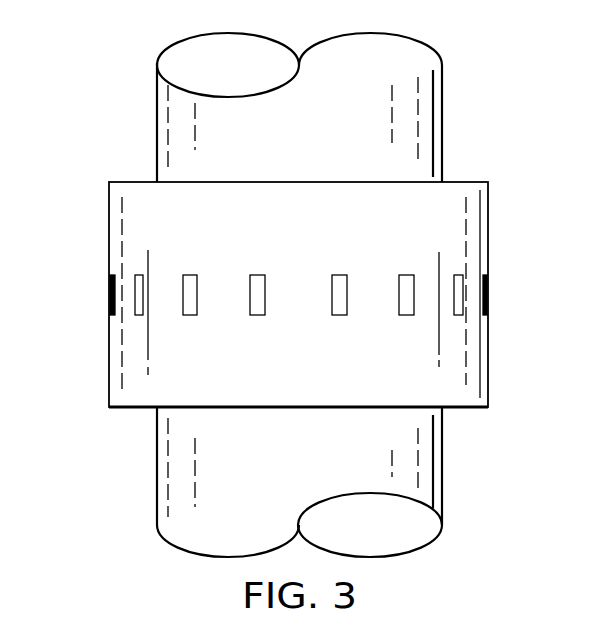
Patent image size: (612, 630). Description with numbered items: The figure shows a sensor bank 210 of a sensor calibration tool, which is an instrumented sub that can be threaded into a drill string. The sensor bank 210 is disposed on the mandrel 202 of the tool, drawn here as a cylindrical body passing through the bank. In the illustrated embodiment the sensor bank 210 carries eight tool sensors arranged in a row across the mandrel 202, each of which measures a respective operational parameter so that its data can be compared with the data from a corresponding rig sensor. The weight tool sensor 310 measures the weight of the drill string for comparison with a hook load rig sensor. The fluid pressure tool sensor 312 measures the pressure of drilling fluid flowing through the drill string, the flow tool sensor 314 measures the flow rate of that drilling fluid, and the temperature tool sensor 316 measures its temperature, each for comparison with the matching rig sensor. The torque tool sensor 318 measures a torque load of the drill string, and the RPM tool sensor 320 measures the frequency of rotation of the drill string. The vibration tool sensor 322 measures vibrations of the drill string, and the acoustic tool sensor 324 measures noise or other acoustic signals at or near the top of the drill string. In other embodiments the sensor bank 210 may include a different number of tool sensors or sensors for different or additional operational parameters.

The mandrel 202 is at (157, 132).
The sensor bank 210 is at (109, 203).
The weight tool sensor 310 is at (115, 274).
The fluid pressure tool sensor 312 is at (139, 316).
The flow tool sensor 314 is at (190, 275).
The temperature tool sensor 316 is at (257, 275).
The torque tool sensor 318 is at (340, 275).
The RPM tool sensor 320 is at (407, 275).
The vibration tool sensor 322 is at (458, 316).
The acoustic tool sensor 324 is at (483, 274).